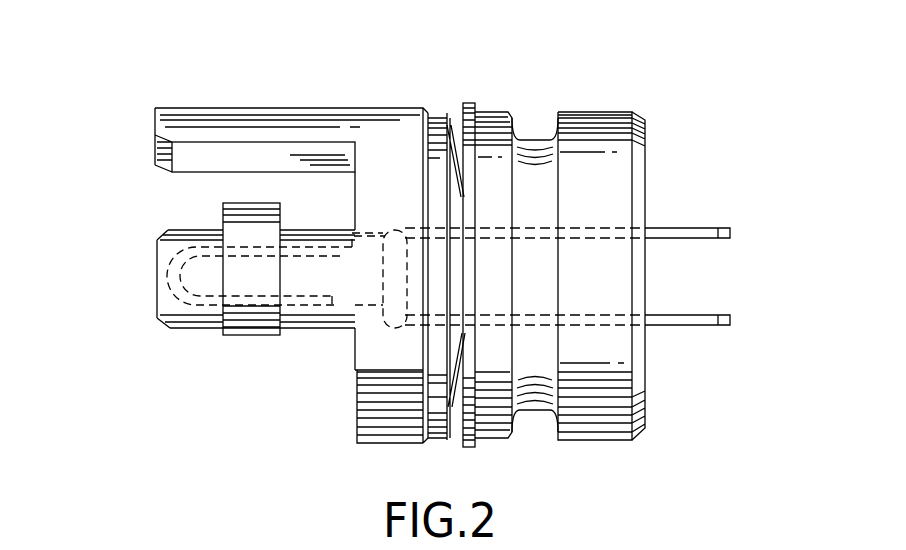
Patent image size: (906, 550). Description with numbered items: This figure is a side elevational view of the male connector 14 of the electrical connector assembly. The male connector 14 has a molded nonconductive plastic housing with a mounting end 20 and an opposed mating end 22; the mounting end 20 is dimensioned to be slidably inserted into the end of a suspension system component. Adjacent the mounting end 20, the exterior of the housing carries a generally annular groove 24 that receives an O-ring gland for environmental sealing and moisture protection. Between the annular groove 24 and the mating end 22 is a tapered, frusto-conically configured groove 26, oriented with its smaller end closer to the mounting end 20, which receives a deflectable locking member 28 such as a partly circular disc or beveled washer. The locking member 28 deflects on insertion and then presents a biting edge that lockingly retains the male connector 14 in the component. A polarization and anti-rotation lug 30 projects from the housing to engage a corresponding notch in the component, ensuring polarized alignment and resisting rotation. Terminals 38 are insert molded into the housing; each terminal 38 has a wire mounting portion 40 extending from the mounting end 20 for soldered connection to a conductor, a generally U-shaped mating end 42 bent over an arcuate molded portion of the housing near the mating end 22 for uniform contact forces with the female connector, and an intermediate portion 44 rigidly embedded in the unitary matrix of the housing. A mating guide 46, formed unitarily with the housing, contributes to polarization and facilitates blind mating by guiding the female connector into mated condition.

The male connector 14 is at (258, 86).
The mounting end 20 is at (547, 242).
The mating end 22 is at (156, 258).
The annular groove 24 is at (540, 140).
The frusto-conically configured groove 26 is at (453, 127).
The locking member 28 is at (467, 103).
The polarization and anti-rotation lug 30 is at (241, 330).
The terminal 38 is at (722, 316).
The wire mounting portion 40 is at (700, 328).
The mating end 42 is at (148, 302).
The intermediate portion 44 is at (392, 330).
The mating guide 46 is at (155, 153).